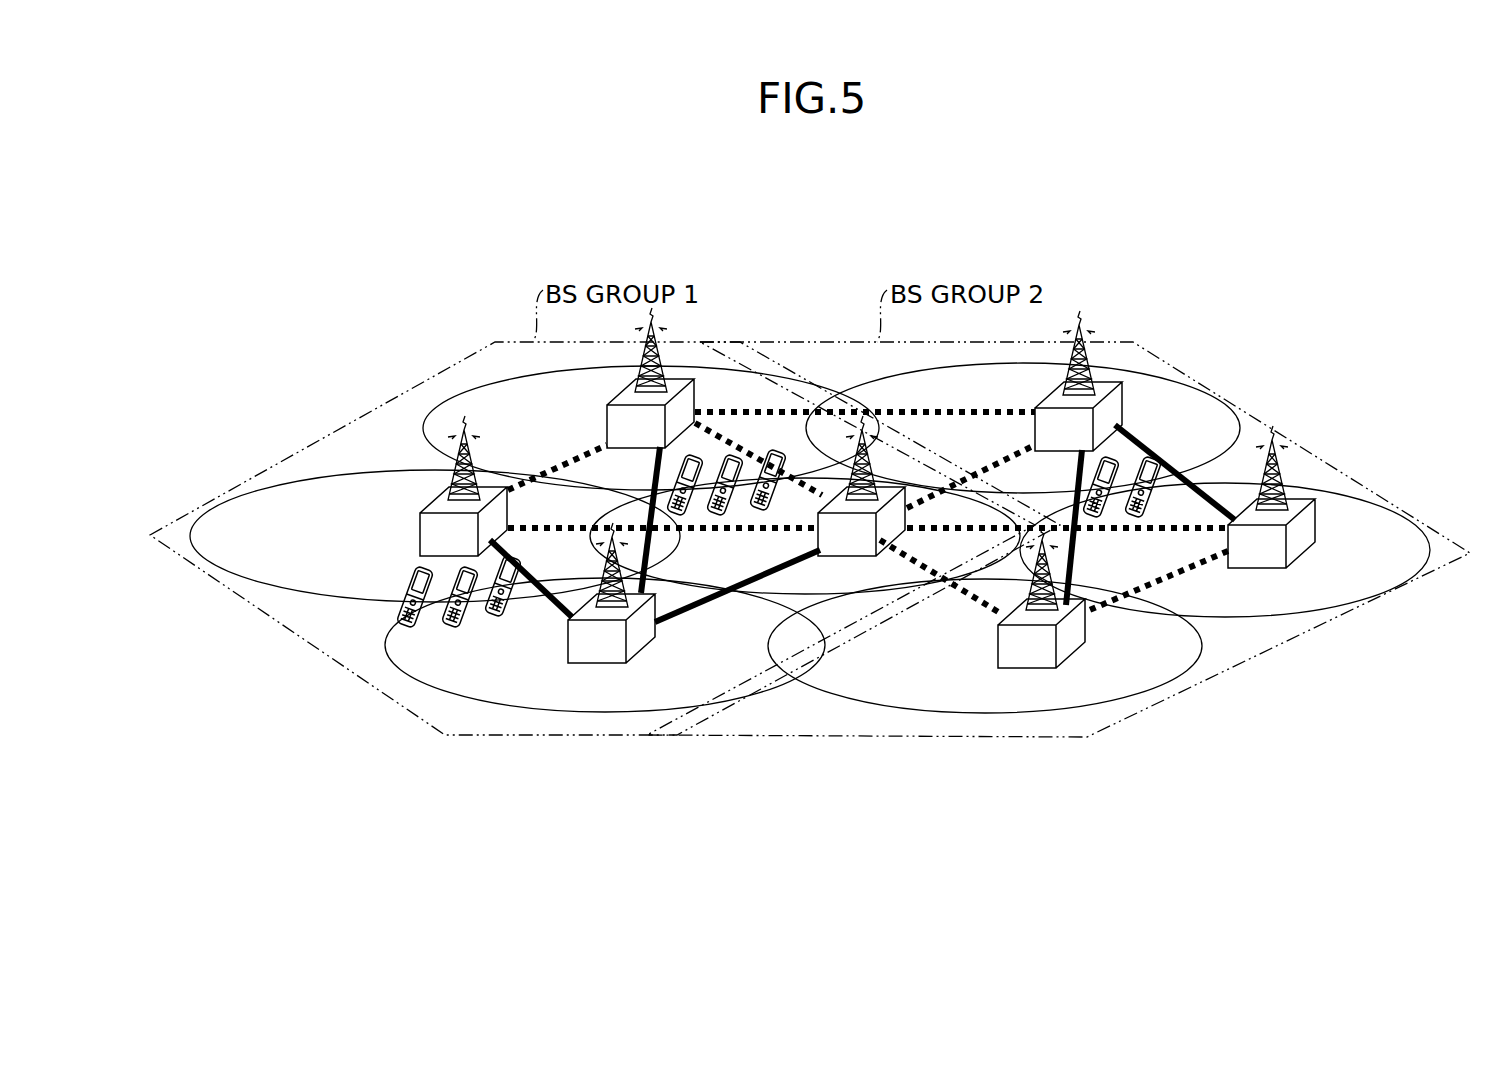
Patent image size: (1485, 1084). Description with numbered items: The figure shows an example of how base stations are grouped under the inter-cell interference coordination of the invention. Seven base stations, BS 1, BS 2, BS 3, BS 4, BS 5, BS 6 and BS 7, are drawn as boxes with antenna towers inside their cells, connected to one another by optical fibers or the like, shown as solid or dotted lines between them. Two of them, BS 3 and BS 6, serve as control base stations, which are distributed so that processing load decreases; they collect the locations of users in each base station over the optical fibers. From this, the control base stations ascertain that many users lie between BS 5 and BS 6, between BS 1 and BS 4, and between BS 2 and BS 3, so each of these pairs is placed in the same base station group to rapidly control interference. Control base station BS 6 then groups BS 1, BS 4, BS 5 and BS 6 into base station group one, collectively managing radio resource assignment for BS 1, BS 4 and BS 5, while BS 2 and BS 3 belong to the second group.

The base station BS1 1 is at (861, 502).
The base station BS2 2 is at (1307, 497).
The control base station BS3 3 is at (1179, 381).
The base station BS4 4 is at (618, 378).
The base station BS5 5 is at (428, 486).
The control base station BS6 6 is at (511, 608).
The base station BS7 7 is at (1072, 597).